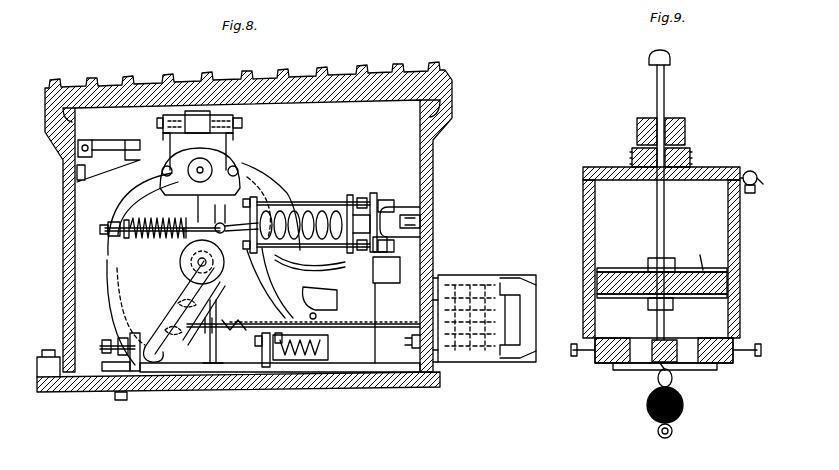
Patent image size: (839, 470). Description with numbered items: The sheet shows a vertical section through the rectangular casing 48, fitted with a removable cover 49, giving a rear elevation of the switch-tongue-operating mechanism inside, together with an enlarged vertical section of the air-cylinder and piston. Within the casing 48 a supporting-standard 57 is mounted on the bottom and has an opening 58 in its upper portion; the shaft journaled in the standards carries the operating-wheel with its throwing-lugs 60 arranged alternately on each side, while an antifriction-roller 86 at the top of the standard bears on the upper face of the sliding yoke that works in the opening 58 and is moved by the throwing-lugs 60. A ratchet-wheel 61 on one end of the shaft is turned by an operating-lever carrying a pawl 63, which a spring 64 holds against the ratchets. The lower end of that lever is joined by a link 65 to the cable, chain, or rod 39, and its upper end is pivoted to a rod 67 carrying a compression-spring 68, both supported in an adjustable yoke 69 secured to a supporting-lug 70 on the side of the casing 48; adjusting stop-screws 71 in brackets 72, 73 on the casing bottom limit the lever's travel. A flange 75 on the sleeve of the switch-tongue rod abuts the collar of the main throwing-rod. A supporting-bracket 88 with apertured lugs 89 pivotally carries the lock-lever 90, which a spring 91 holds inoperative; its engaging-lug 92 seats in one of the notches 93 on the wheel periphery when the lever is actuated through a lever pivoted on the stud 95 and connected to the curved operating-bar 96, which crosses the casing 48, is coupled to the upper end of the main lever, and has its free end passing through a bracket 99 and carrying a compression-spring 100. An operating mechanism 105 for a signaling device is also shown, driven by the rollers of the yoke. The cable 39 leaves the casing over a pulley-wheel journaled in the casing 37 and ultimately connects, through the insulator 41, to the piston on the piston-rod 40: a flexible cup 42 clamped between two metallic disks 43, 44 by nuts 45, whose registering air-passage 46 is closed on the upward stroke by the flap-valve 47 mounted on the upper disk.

In FIG. 8, the casing 37 is at (497, 281).
In FIG. 8, the cable, chain, or rod 39 is at (386, 310).
In FIG. 9, the piston-rod 40 is at (668, 200).
In FIG. 9, the insulator 41 is at (646, 404).
In FIG. 9, the flexible cup 42 is at (748, 273).
In FIG. 9, the metallic disk 43 is at (597, 271).
In FIG. 9, the metallic disk 44 is at (597, 296).
In FIG. 9, the nuts 45 is at (648, 262).
In FIG. 9, the air-passage 46 is at (666, 334).
In FIG. 9, the flap-valve 47 is at (735, 220).
In FIG. 8, the rectangular casing 48 is at (248, 217).
In FIG. 9, the rectangular casing 48 is at (583, 220).
In FIG. 8, the removable cover 49 is at (236, 64).
In FIG. 8, the supporting-standard 57 is at (160, 312).
In FIG. 8, the opening 58 is at (166, 133).
In FIG. 8, the throwing-lugs 60 is at (189, 214).
In FIG. 8, the ratchet-wheel 61 is at (183, 266).
In FIG. 8, the pawl 63 is at (222, 284).
In FIG. 8, the spring 64 is at (303, 315).
In FIG. 8, the link 65 is at (219, 331).
In FIG. 8, the rod 67 is at (222, 222).
In FIG. 8, the compression-spring 68 is at (298, 210).
In FIG. 8, the adjustable yoke 69 is at (334, 210).
In FIG. 8, the supporting-lug 70 is at (398, 213).
In FIG. 8, the adjusting stop-screws 71 is at (106, 338).
In FIG. 8, the bracket 72 is at (273, 367).
In FIG. 8, the bracket 73 is at (113, 364).
In FIG. 8, the flange 75 is at (200, 183).
In FIG. 8, the antifriction-roller 86 is at (236, 119).
In FIG. 8, the supporting-bracket 88 is at (365, 342).
In FIG. 8, the apertured lugs 89 is at (324, 310).
In FIG. 8, the lock-lever 90 is at (318, 268).
In FIG. 8, the spring 91 is at (310, 346).
In FIG. 8, the engaging-lug 92 is at (328, 295).
In FIG. 8, the notches 93 is at (258, 178).
In FIG. 8, the stud 95 is at (270, 272).
In FIG. 8, the curved operating-bar 96 is at (395, 244).
In FIG. 8, the bracket 99 is at (114, 227).
In FIG. 8, the compression-spring 100 is at (162, 238).
In FIG. 8, the operating mechanism 105 is at (108, 161).